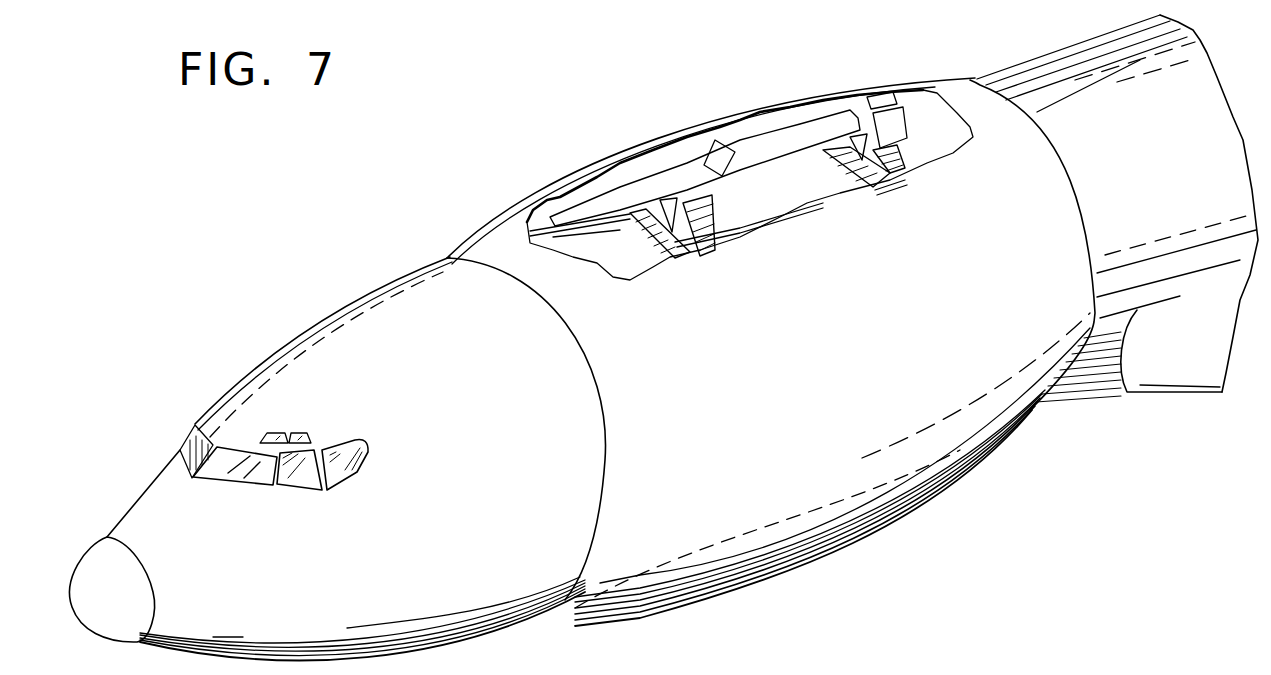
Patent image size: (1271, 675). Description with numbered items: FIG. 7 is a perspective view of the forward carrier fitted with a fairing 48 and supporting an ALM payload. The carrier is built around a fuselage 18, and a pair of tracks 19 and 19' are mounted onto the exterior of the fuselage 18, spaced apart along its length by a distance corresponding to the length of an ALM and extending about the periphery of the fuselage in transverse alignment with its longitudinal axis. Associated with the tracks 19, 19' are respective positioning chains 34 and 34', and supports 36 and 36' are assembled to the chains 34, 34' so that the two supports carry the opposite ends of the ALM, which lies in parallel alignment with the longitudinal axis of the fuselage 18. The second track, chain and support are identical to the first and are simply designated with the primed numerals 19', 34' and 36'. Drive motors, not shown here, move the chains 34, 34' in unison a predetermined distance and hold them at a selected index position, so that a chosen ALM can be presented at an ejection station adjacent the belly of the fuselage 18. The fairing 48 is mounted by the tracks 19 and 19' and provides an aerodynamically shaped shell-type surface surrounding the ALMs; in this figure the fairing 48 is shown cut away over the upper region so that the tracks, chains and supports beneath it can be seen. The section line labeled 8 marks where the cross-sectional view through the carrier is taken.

The section line 8-8 indicator 8 is at (508, 285).
The fuselage 18 is at (528, 459).
The track 19 is at (676, 260).
The track 19' is at (875, 205).
The positioning chain 34 is at (683, 246).
The positioning chain 34' is at (880, 181).
The support 36 is at (657, 202).
The support 36' is at (854, 108).
The fairing 48 is at (800, 449).
The ALM payload ALM is at (693, 160).